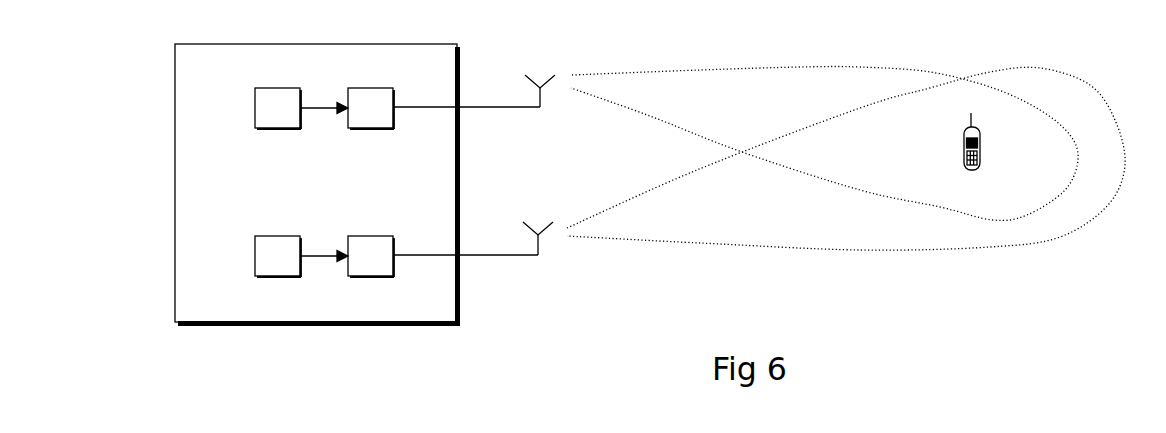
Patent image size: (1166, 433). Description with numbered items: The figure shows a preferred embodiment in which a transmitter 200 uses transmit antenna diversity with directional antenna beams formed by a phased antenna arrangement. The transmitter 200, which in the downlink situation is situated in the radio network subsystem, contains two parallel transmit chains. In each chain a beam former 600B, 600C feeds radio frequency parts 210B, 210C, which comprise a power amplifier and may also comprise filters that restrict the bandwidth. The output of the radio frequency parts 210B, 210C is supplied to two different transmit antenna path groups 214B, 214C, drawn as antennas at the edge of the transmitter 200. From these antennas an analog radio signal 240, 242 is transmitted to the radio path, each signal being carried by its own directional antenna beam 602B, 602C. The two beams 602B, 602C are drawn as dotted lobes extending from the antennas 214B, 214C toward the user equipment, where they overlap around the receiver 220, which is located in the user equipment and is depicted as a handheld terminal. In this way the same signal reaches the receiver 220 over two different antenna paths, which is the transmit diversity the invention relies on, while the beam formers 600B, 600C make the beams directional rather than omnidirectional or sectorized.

The transmitter 200 is at (236, 44).
The beam former 600B is at (292, 88).
The beam former 600C is at (292, 236).
The radio frequency parts 210B is at (385, 88).
The radio frequency parts 210C is at (385, 236).
The transmit antenna path group 214B is at (526, 126).
The transmit antenna path group 214C is at (524, 274).
The analog radio signal 240 is at (611, 90).
The analog radio signal 242 is at (614, 228).
The directional antenna beam 602B is at (824, 111).
The directional antenna beam 602C is at (846, 192).
The receiver 220 is at (983, 134).